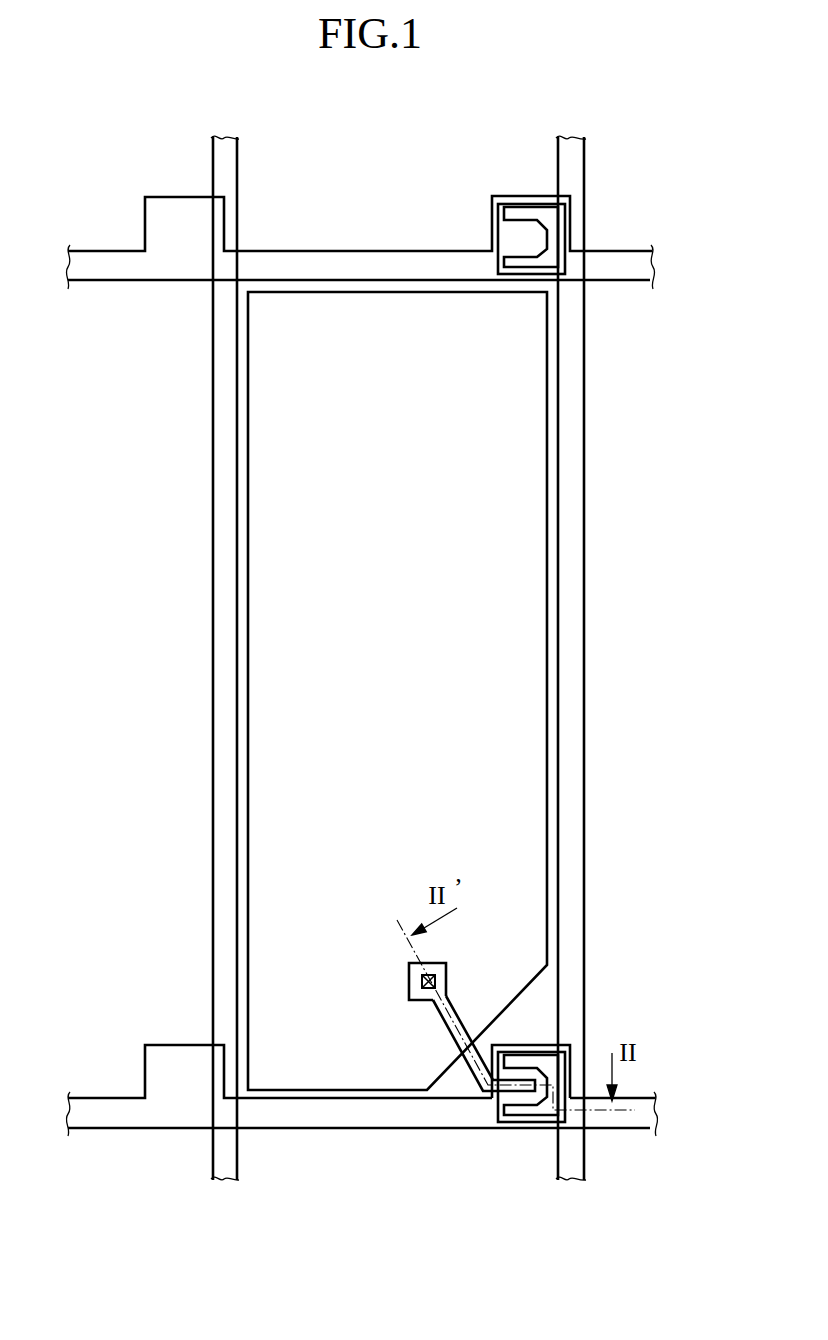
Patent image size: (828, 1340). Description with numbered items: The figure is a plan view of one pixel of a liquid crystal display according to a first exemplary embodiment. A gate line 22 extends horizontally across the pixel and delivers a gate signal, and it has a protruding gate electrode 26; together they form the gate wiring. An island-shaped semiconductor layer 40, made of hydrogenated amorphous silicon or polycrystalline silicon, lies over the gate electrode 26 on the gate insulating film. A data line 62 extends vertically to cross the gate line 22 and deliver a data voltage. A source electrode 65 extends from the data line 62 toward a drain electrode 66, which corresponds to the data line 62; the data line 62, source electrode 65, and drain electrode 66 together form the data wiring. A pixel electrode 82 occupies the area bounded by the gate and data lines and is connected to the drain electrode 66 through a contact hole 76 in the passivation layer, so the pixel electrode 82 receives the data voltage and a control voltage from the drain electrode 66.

The gate line 22 is at (323, 1128).
The gate electrode 26 is at (531, 1047).
The semiconductor layer 40 is at (492, 1109).
The data line 62 is at (584, 527).
The source electrode 65 is at (541, 1115).
The drain electrode 66 is at (518, 1093).
The contact hole 76 is at (434, 967).
The pixel electrode 82 is at (547, 415).